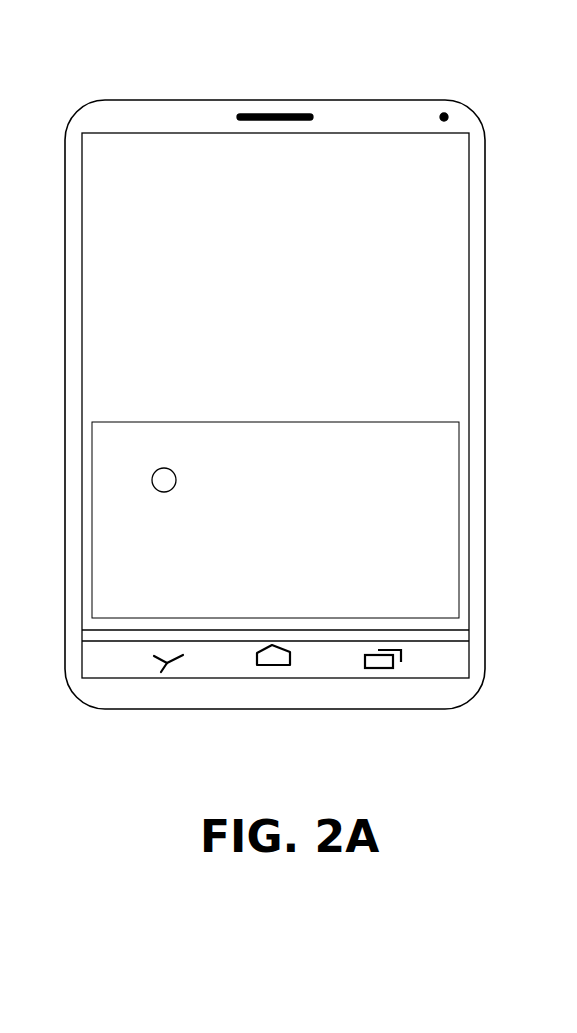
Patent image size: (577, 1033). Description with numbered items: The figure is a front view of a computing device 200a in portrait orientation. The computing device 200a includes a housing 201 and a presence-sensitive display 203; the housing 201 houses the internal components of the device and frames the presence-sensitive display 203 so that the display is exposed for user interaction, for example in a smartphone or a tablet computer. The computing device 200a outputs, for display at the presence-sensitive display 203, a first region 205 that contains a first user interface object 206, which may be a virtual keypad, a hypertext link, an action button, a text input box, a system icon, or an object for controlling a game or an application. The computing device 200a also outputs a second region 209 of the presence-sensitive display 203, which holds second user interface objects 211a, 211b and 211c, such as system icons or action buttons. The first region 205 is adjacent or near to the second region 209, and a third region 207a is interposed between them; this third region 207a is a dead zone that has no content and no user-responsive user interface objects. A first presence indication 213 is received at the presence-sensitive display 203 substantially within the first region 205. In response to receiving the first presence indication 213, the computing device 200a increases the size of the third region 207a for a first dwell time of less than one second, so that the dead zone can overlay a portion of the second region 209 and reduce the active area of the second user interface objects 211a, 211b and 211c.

The computing device 200a is at (297, 48).
The presence-sensitive display 203 is at (469, 200).
The housing 201 is at (474, 440).
The first region 205 is at (293, 391).
The first user interface object 206 is at (293, 529).
The first presence indication 213 is at (169, 475).
The third region 207a is at (90, 637).
The second region 209 is at (460, 657).
The second user interface object 211a is at (159, 669).
The second user interface object 211b is at (268, 670).
The second user interface object 211c is at (380, 660).